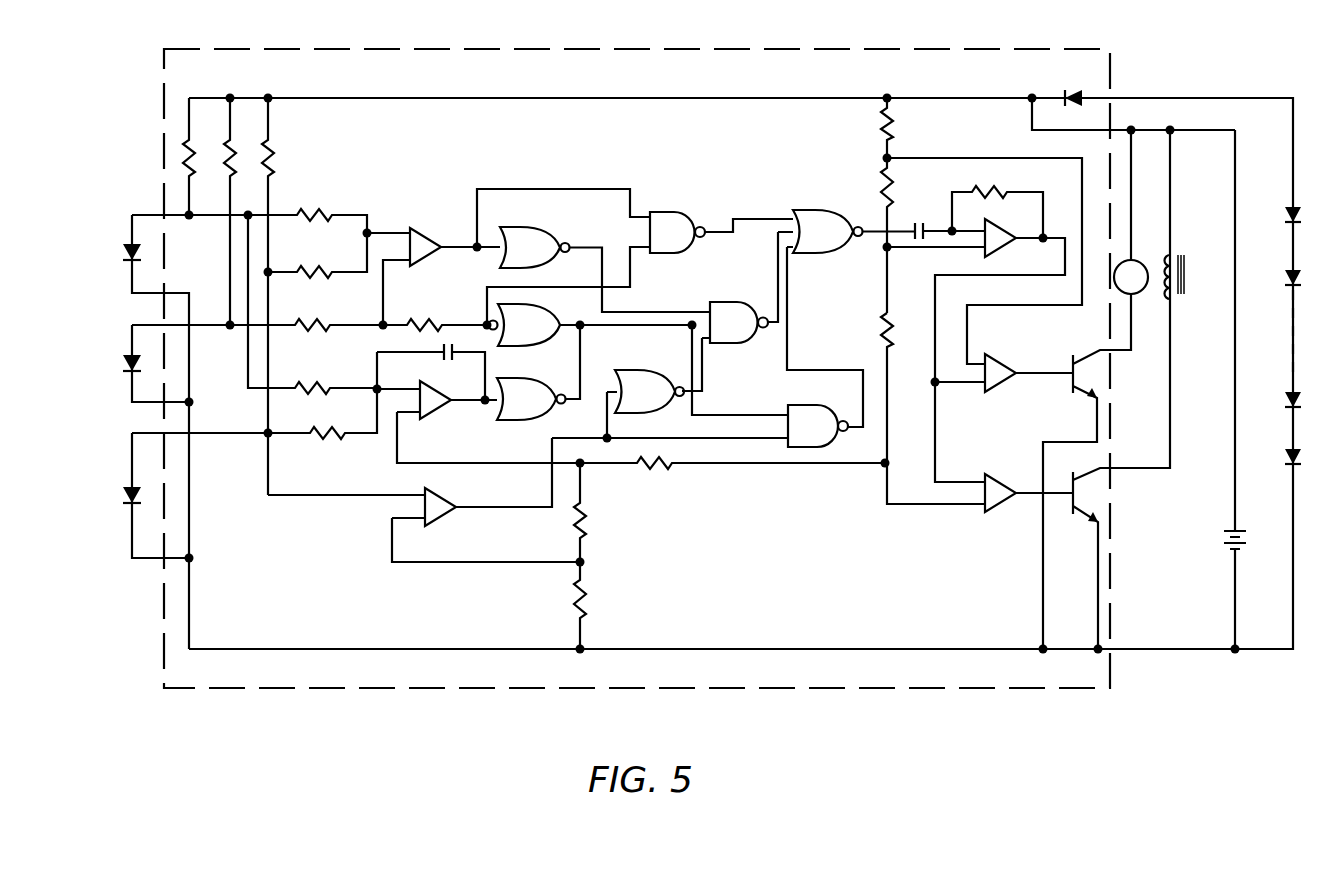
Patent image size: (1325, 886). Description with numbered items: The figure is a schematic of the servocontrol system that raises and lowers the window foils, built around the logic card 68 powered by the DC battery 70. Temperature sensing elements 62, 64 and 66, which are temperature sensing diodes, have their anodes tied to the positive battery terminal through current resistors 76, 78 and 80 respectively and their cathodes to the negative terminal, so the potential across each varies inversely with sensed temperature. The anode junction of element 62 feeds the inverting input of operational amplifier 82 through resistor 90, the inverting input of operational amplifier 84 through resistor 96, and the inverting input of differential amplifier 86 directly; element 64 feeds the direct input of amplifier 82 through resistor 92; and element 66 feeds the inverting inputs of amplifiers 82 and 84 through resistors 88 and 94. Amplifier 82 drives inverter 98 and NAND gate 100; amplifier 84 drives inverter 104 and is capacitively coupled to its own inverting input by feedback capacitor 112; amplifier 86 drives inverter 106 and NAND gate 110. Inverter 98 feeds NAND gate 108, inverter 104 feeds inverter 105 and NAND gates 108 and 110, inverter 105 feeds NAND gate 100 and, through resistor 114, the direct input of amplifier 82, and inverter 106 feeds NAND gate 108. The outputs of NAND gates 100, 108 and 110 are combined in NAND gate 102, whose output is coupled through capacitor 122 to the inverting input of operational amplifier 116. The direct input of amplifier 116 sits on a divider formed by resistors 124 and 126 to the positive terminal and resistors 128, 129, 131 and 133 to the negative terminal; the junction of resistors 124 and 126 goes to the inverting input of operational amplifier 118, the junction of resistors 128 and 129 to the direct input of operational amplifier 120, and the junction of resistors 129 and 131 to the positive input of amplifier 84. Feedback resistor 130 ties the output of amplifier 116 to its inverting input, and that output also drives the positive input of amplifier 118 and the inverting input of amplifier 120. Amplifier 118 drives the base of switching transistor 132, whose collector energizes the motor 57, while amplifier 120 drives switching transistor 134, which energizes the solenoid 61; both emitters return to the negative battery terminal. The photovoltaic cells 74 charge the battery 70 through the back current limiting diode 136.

The logic card 68 is at (700, 48).
The current resistor 80 is at (192, 150).
The current resistor 78 is at (233, 150).
The current resistor 76 is at (272, 152).
The resistor 88 is at (300, 212).
The resistor 90 is at (297, 270).
The temperature sensing element 66 is at (128, 253).
The temperature sensing element 64 is at (128, 364).
The temperature sensing element 62 is at (128, 496).
The resistor 92 is at (318, 303).
The resistor 94 is at (316, 386).
The resistor 96 is at (331, 442).
The resistor 114 is at (424, 322).
The feedback capacitor 112 is at (460, 356).
The operational amplifier 82 is at (424, 234).
The operational amplifier 84 is at (436, 410).
The differential amplifier 86 is at (455, 506).
The inverter 98 is at (540, 228).
The NAND gate 100 is at (670, 215).
The NAND gate 102 is at (820, 212).
The inverter 104 is at (532, 421).
The inverter 105 is at (535, 346).
The inverter 106 is at (656, 372).
The NAND gate 108 is at (742, 306).
The NAND gate 110 is at (806, 410).
The resistor 129 is at (664, 468).
The resistor 131 is at (584, 512).
The resistor 133 is at (584, 598).
The resistor 124 is at (893, 132).
The resistor 126 is at (893, 192).
The resistor 128 is at (884, 320).
The capacitor 122 is at (930, 208).
The feedback resistor 130 is at (1002, 190).
The operational amplifier 116 is at (1006, 246).
The operational amplifier 118 is at (996, 360).
The operational amplifier 120 is at (1024, 462).
The switching transistor 132 is at (1072, 364).
The switching transistor 134 is at (1080, 522).
The back current limiting diode 136 is at (1068, 92).
The motor 57 is at (1160, 244).
The solenoid 61 is at (1176, 296).
The DC battery 70 is at (1224, 544).
The photovoltaic cells 74 is at (1288, 222).